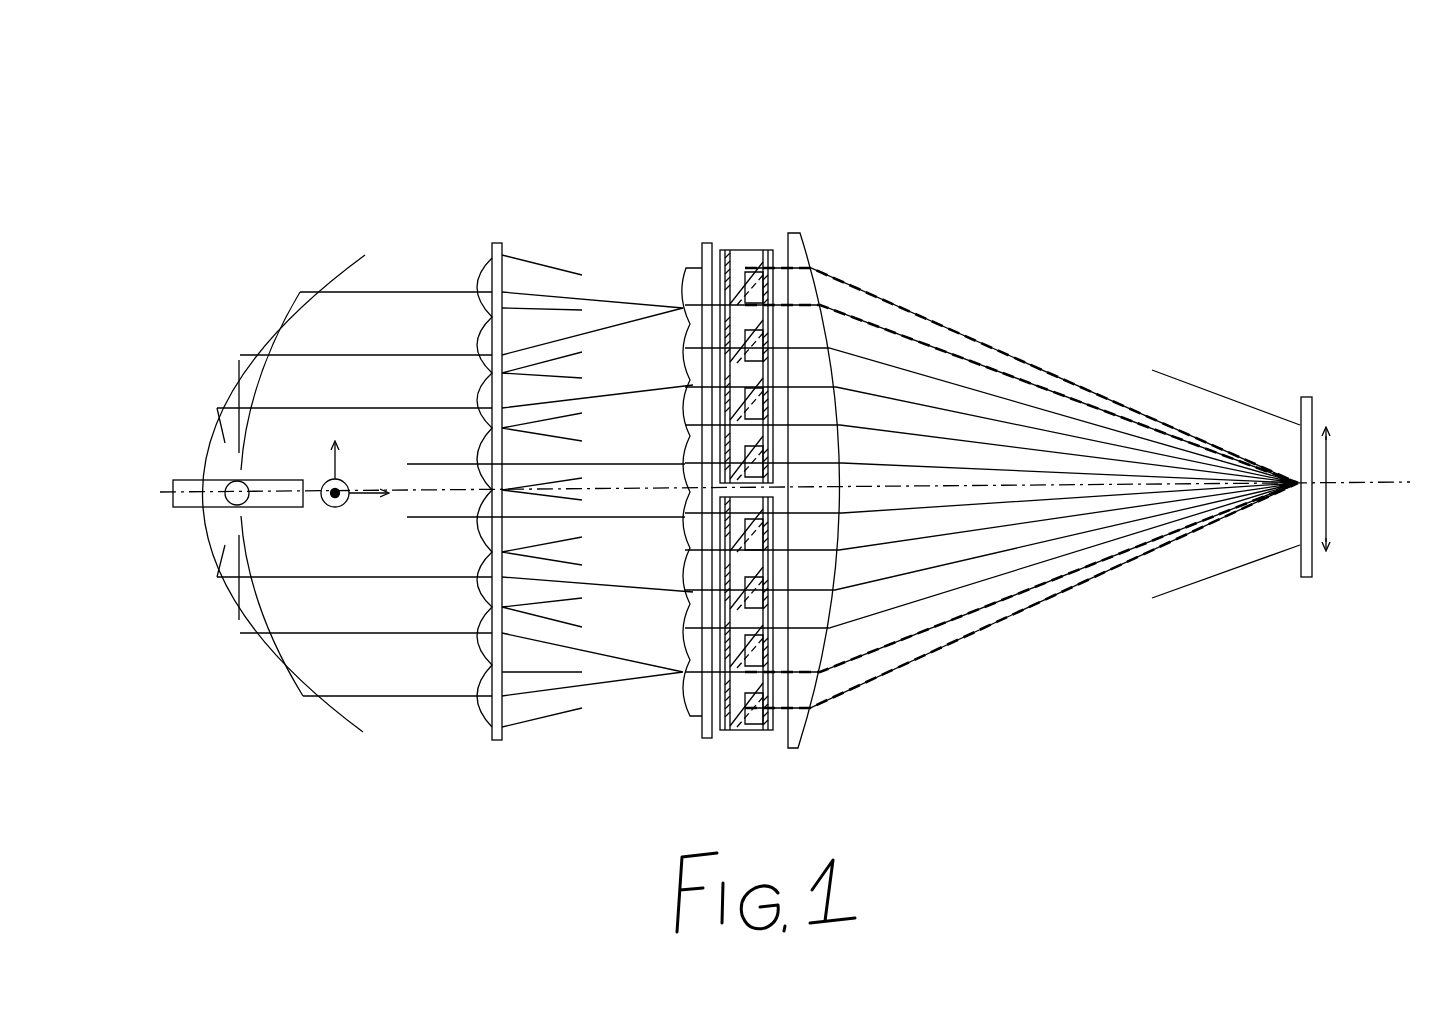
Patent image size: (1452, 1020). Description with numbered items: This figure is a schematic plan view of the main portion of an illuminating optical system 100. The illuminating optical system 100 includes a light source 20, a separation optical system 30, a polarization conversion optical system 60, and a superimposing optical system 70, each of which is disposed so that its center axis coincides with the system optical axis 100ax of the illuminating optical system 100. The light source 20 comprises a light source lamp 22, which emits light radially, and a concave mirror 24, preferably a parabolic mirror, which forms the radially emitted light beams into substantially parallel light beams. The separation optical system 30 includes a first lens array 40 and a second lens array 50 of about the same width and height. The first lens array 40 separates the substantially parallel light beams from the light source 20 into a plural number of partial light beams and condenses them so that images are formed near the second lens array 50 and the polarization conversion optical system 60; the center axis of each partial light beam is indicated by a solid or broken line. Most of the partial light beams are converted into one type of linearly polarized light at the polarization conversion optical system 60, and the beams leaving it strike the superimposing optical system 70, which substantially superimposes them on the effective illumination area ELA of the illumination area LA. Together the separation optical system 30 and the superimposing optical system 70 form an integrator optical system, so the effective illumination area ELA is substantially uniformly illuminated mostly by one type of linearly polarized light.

The illuminating optical system 100 is at (303, 81).
The light source 20 is at (300, 218).
The light source lamp 22 is at (238, 480).
The concave mirror 24 is at (232, 620).
The separation optical system 30 is at (684, 168).
The first lens array 40 is at (486, 236).
The second lens array 50 is at (690, 240).
The polarization conversion optical system 60 is at (757, 178).
The superimposing optical system (superimposing lens) 70 is at (794, 232).
The illumination area LA is at (1305, 396).
The effective illumination area ELA is at (1328, 456).
The system optical axis 100ax is at (1350, 482).